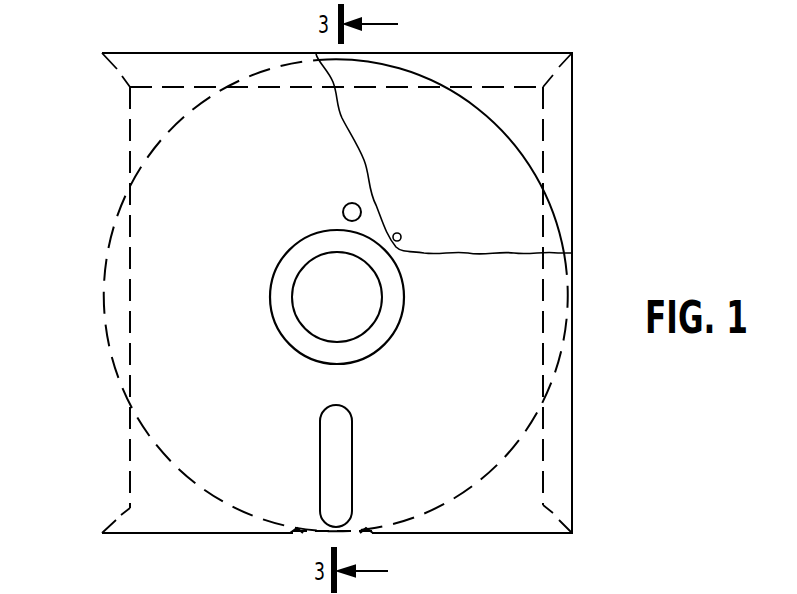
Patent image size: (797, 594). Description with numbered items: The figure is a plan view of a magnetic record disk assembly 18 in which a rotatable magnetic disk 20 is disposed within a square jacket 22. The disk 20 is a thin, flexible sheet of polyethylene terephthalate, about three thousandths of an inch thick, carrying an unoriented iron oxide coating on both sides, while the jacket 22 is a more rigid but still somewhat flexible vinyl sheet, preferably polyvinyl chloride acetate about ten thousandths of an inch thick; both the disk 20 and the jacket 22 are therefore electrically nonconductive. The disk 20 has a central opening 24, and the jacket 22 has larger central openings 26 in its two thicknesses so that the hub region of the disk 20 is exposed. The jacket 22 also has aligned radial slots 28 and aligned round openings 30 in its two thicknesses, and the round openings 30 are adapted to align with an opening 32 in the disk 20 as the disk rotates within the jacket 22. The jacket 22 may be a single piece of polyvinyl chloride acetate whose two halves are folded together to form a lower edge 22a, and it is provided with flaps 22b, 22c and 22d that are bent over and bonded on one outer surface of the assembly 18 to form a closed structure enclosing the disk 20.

The disk assembly 18 is at (92, 204).
The magnetic disk 20 is at (515, 143).
The jacket 22 is at (572, 203).
The lower edge 22a is at (480, 534).
The flap 22b is at (132, 471).
The flap 22c is at (501, 86).
The flap 22d is at (541, 458).
The central opening 24 is at (306, 268).
The central openings 26 is at (297, 341).
The radial slots 28 is at (356, 457).
The round openings 30 is at (345, 205).
The opening 32 is at (401, 233).